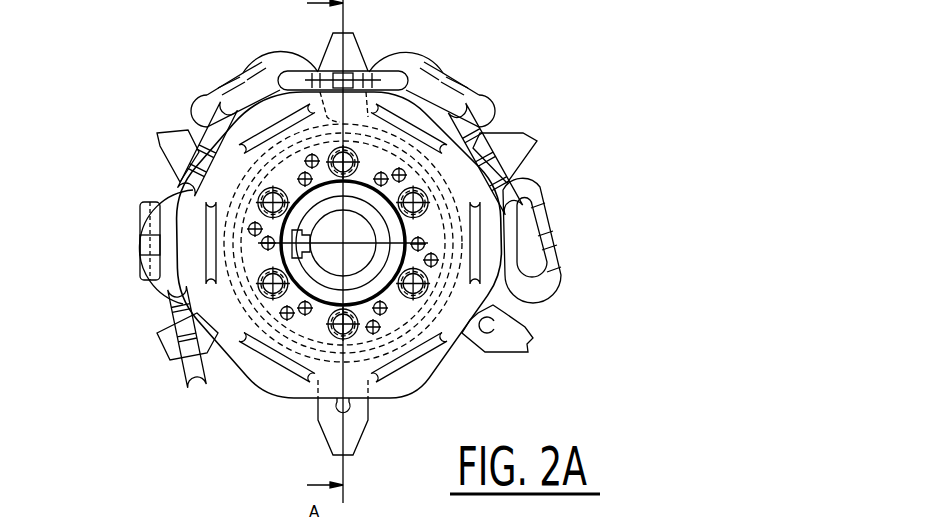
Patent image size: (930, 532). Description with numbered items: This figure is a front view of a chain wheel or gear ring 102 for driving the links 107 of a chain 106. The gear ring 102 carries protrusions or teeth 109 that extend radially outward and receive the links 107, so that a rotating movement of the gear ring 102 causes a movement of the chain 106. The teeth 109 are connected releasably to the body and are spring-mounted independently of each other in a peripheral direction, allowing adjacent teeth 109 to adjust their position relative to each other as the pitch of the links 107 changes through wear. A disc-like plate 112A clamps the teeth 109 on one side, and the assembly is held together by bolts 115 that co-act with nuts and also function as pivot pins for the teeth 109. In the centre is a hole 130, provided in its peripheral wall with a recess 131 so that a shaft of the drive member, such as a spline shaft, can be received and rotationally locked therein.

The gear ring 102 is at (490, 378).
The chain 106 is at (575, 227).
The links 107 is at (457, 83).
The teeth 109 is at (517, 147).
The disc-like plate 112A is at (252, 120).
The bolts 115 is at (260, 207).
The hole 130 is at (330, 255).
The recess 131 is at (265, 248).